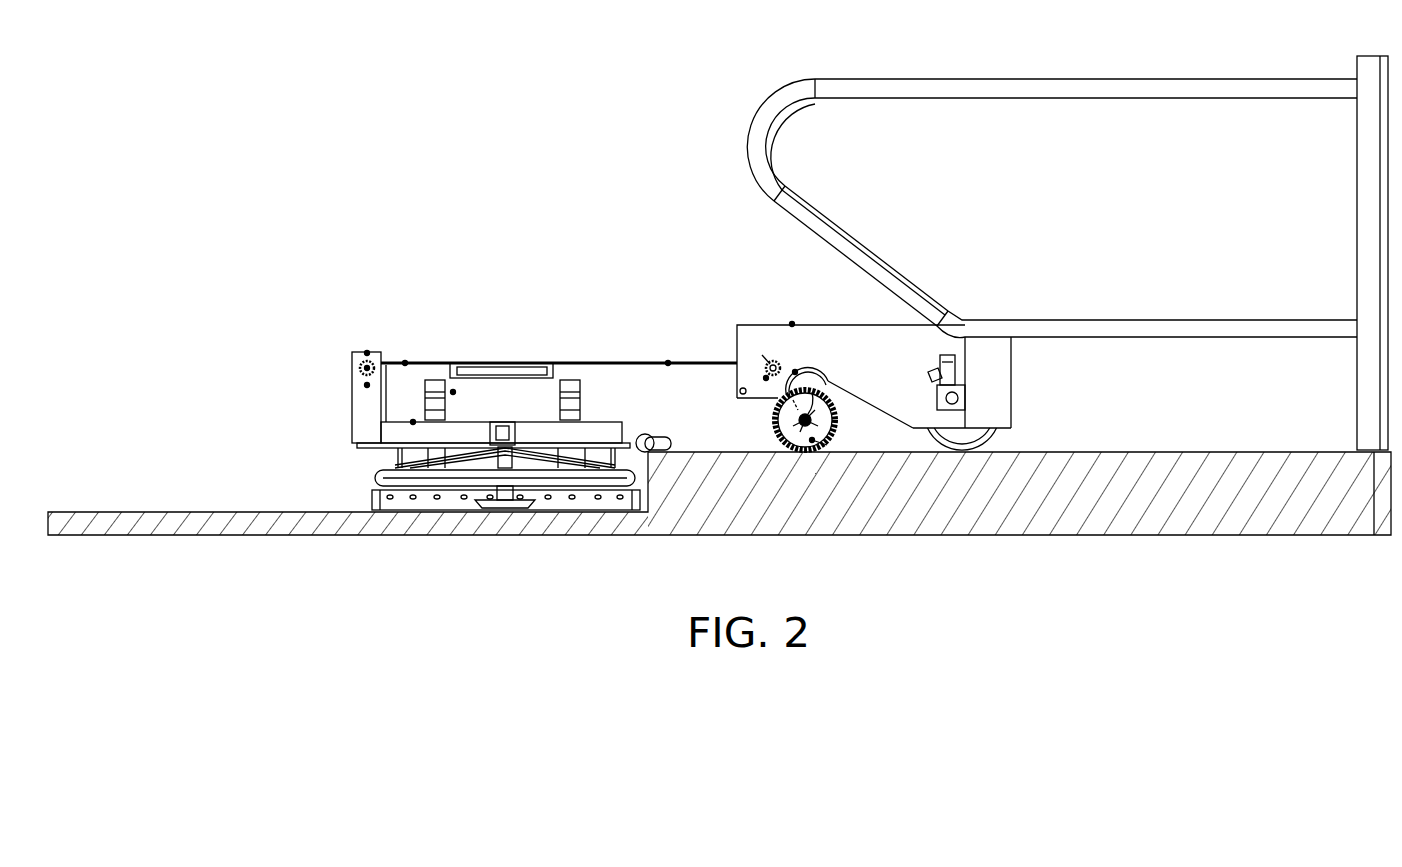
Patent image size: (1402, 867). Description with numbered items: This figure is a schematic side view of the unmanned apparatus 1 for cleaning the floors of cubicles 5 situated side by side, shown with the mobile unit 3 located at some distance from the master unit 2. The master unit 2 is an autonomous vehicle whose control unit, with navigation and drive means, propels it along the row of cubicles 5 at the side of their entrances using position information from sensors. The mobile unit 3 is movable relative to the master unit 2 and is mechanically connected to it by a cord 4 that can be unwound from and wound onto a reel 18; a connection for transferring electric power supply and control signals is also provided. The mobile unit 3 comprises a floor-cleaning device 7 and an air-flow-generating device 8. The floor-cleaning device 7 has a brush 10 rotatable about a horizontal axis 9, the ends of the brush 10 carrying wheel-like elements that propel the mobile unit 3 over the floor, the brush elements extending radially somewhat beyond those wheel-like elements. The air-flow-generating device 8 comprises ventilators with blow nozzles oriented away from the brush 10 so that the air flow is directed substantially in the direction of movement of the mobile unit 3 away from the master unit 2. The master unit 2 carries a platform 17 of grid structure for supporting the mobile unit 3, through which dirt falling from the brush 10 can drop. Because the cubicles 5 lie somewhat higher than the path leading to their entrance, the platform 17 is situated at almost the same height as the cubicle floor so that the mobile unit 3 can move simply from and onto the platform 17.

The unmanned apparatus 1 is at (336, 312).
The master unit 2 is at (453, 392).
The mobile unit 3 is at (750, 337).
The cord 4 is at (405, 362).
The cubicle 5 is at (1297, 450).
The floor-cleaning device 7 is at (859, 428).
The air-flow-generating device 8 is at (815, 314).
The horizontal axis 9 is at (828, 380).
The brush 10 is at (775, 426).
The platform 17 is at (413, 422).
The reel 18 is at (354, 354).